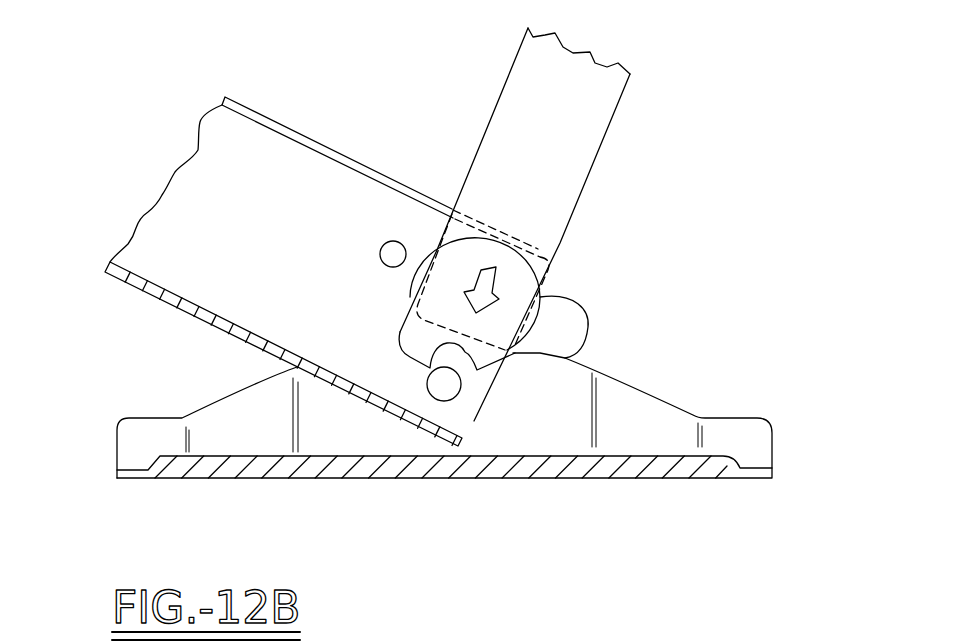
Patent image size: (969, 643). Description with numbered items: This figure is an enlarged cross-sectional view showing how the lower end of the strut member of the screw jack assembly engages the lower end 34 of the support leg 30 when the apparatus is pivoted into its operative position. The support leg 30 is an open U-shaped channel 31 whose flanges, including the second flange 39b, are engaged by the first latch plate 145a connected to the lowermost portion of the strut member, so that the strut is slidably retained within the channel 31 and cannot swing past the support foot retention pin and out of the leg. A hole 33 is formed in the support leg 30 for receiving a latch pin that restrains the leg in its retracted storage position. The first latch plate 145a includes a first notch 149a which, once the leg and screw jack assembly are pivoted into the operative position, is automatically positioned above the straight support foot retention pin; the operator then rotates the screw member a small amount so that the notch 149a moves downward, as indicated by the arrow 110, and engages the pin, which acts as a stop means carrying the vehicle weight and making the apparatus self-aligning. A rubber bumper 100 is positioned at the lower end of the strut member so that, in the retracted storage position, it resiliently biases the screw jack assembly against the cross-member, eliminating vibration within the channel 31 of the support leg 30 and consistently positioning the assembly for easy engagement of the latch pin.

The support leg 30 is at (190, 315).
The U-shaped channel 31 is at (150, 281).
The hole 33 is at (380, 248).
The lower end 34 is at (408, 421).
The second flange 39b is at (356, 162).
The rubber bumper 100 is at (589, 337).
The arrow 110 is at (480, 287).
The first latch plate 145a is at (520, 292).
The first notch 149a is at (460, 348).